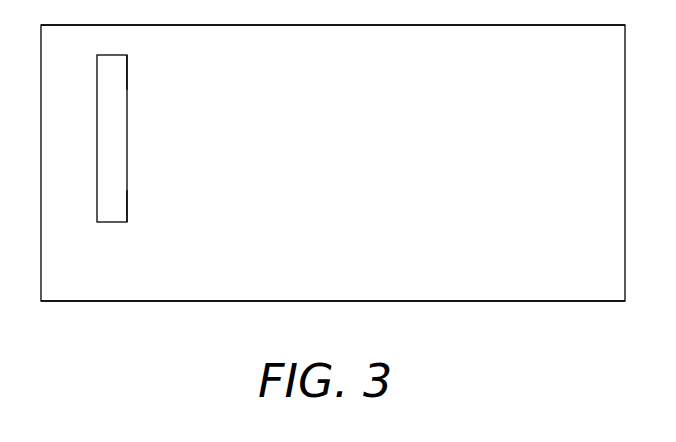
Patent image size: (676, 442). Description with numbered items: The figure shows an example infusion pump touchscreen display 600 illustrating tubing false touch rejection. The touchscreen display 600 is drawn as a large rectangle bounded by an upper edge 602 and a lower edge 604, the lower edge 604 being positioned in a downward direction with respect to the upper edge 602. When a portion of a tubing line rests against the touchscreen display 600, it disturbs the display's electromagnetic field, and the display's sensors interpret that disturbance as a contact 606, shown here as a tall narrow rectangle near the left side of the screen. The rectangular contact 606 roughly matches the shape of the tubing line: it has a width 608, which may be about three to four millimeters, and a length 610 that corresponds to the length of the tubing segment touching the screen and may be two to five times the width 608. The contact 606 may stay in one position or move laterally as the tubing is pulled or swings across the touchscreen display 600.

The touchscreen display 600 is at (352, 174).
The upper edge 602 is at (443, 25).
The lower edge 604 is at (443, 300).
The contact 606 is at (163, 135).
The width 608 is at (127, 78).
The length 610 is at (127, 207).